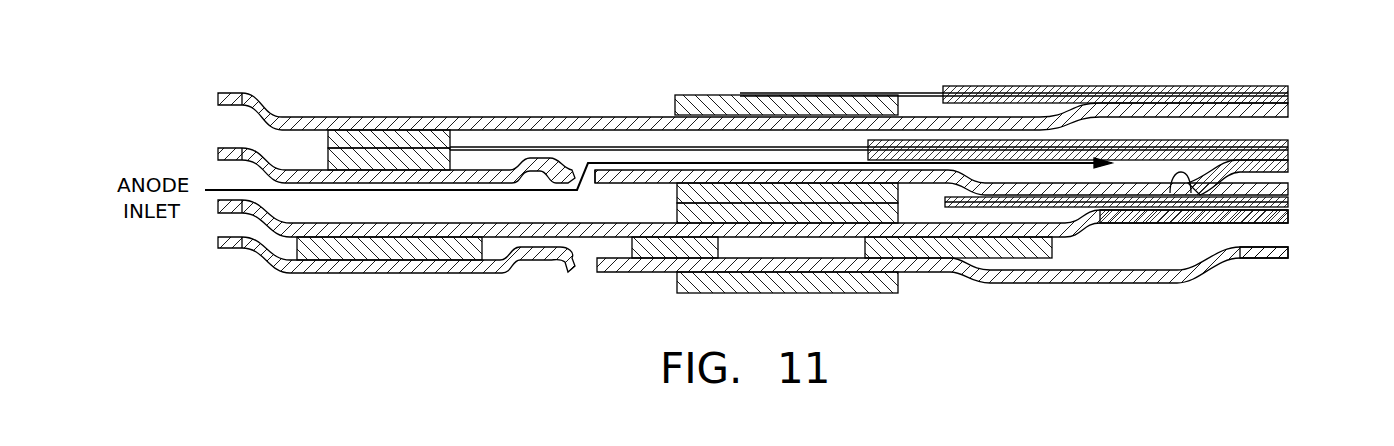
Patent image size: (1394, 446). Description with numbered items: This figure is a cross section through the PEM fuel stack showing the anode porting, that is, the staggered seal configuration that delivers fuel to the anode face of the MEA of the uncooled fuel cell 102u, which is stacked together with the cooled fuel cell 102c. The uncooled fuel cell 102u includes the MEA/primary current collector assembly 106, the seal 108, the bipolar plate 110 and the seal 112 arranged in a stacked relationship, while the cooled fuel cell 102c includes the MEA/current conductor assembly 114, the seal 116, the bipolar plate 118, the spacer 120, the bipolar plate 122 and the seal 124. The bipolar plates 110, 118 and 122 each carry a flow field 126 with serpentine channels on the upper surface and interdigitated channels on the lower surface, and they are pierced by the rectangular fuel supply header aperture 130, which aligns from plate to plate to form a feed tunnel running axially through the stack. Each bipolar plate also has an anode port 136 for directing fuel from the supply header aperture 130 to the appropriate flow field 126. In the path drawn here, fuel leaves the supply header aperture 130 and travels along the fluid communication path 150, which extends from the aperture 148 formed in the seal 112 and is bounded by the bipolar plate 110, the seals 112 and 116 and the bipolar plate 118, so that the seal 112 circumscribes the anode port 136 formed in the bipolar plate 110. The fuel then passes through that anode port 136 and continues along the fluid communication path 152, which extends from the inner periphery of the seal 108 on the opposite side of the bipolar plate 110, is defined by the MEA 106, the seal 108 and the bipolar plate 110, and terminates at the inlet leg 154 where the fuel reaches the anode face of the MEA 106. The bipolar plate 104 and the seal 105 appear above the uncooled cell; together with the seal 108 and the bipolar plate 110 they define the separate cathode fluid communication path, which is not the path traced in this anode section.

The uncooled fuel cell 102u is at (183, 165).
The cooled fuel cell 102c is at (168, 230).
The supply header aperture (fuel) 130 is at (218, 154).
The seal 105 is at (410, 138).
The seal 108 is at (342, 157).
The bipolar plate 110 is at (1288, 166).
The fluid communication path 152 is at (625, 158).
The aperture 148 is at (674, 192).
The inlet leg 154 is at (823, 158).
The bipolar plate 104 is at (1288, 92).
The MEA/primary current collector assembly 106 is at (1288, 142).
The MEA/current conductor assembly 114 is at (1288, 197).
The bipolar plate 118 is at (1288, 217).
The bipolar plate 122 is at (1288, 257).
The seal 112 is at (712, 192).
The seal 116 is at (688, 212).
The spacer 120 is at (1028, 250).
The seal 124 is at (880, 285).
The fluid communication path 150 is at (331, 210).
The anode port 136 is at (596, 180).
The flow field 126 is at (1190, 193).